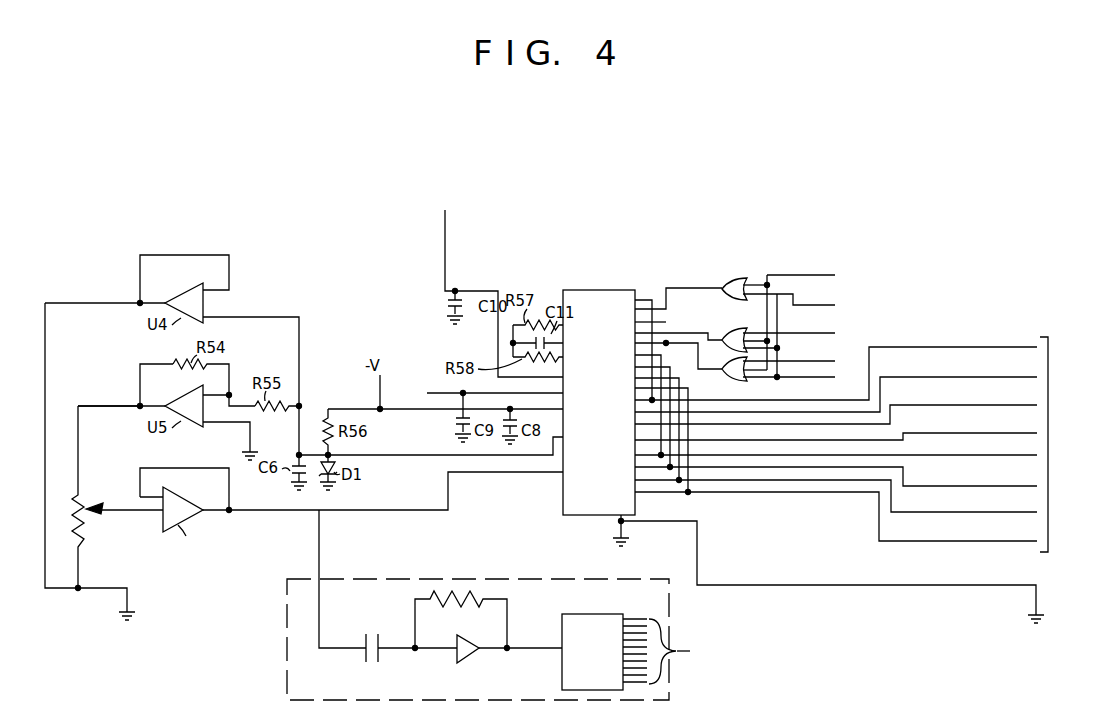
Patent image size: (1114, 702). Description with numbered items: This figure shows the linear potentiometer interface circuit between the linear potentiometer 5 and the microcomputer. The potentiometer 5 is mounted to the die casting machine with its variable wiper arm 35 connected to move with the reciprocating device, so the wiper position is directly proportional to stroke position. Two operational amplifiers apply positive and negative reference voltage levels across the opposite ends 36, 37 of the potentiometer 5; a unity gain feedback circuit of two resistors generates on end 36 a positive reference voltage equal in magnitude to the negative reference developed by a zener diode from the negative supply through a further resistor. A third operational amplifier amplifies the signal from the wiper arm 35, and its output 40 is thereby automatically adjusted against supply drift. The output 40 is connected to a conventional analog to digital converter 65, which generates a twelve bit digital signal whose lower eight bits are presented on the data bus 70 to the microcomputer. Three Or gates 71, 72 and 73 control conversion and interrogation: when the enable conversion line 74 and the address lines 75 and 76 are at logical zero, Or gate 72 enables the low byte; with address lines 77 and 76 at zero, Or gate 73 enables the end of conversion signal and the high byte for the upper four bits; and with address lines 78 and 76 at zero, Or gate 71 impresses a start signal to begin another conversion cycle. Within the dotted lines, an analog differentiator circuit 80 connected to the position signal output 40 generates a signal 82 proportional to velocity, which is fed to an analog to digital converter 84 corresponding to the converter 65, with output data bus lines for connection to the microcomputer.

The linear potentiometer 5 is at (80, 509).
The wiper arm 35 is at (128, 512).
The end of potentiometer 36 is at (103, 407).
The end of potentiometer 37 is at (108, 303).
The output of operational amplifier U6 40 is at (262, 512).
The analog to digital converter 65 is at (600, 290).
The data bus D0-D7 70 is at (1048, 447).
The Or gate 71 is at (736, 280).
The Or gate 72 is at (738, 334).
The Or gate 73 is at (738, 377).
The enable conversion line 74 is at (806, 378).
The address line 75 is at (802, 336).
The address line 76 is at (802, 275).
The address line 77 is at (802, 365).
The address line 78 is at (808, 310).
The analog differentiator circuit 80 is at (526, 605).
The velocity signal 82 is at (545, 647).
The analog to digital converter 84 is at (562, 683).